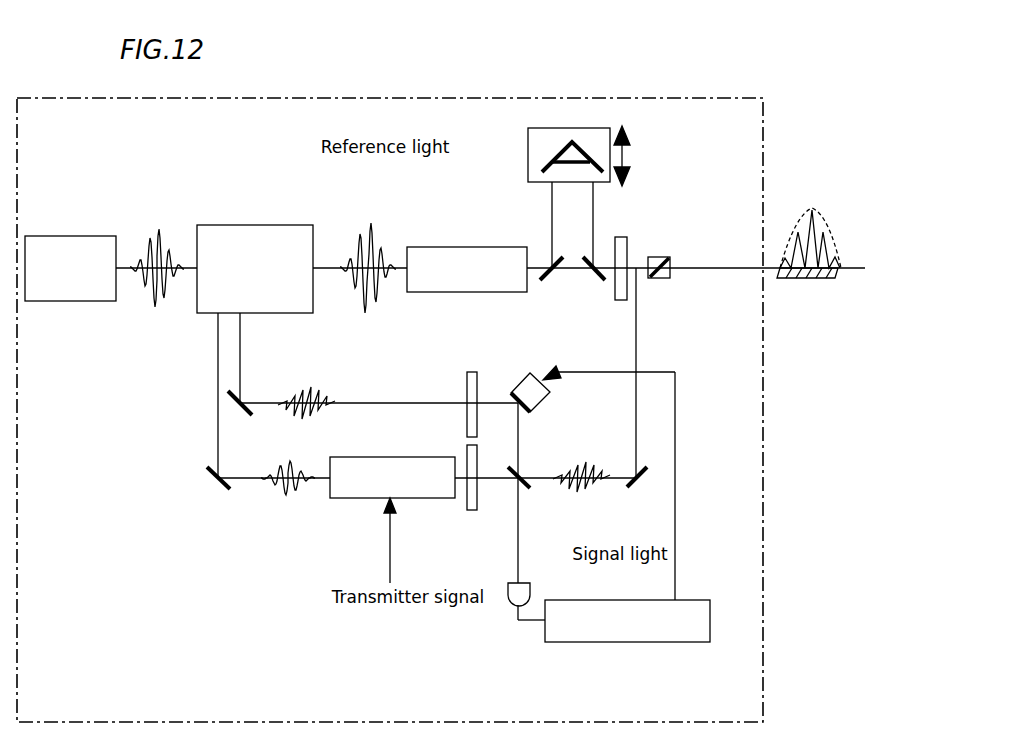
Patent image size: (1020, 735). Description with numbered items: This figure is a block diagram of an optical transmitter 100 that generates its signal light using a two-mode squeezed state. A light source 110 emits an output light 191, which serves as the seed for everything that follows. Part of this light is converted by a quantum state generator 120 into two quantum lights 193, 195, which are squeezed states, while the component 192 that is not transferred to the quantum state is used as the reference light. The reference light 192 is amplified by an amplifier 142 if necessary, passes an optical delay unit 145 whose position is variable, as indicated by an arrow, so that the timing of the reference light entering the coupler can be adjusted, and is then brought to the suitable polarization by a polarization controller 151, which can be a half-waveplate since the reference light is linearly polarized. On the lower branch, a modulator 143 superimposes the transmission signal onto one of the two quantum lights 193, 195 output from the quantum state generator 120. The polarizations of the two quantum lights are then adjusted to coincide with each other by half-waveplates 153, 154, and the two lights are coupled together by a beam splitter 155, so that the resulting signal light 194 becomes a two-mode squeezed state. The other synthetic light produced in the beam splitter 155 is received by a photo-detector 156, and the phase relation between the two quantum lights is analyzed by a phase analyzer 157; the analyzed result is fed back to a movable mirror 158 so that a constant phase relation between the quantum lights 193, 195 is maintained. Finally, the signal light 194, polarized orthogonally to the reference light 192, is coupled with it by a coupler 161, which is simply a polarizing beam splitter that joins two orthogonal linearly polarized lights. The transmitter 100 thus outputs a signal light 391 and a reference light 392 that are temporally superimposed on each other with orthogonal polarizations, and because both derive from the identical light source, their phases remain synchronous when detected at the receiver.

The optical transmitter 100 is at (717, 133).
The light source 110 is at (73, 236).
The quantum state generator 120 is at (255, 226).
The amplifier 142 is at (430, 247).
The modulator 143 is at (368, 498).
The optical delay unit 145 is at (528, 165).
The polarization controller 151 is at (620, 245).
The polarization controller 153 is at (474, 510).
The polarization controller 154 is at (473, 372).
The beam splitter 155 is at (524, 483).
The photo-detector 156 is at (510, 597).
The phase analyzer 157 is at (603, 643).
The movable mirror 158 is at (540, 398).
The optical coupler 161 is at (668, 278).
The output light 191 is at (153, 222).
The reference light 192 is at (365, 222).
The quantum light 193 is at (282, 495).
The signal light 194 is at (578, 490).
The quantum light 195 is at (305, 395).
The signal light 391 is at (790, 278).
The reference light 392 is at (816, 215).